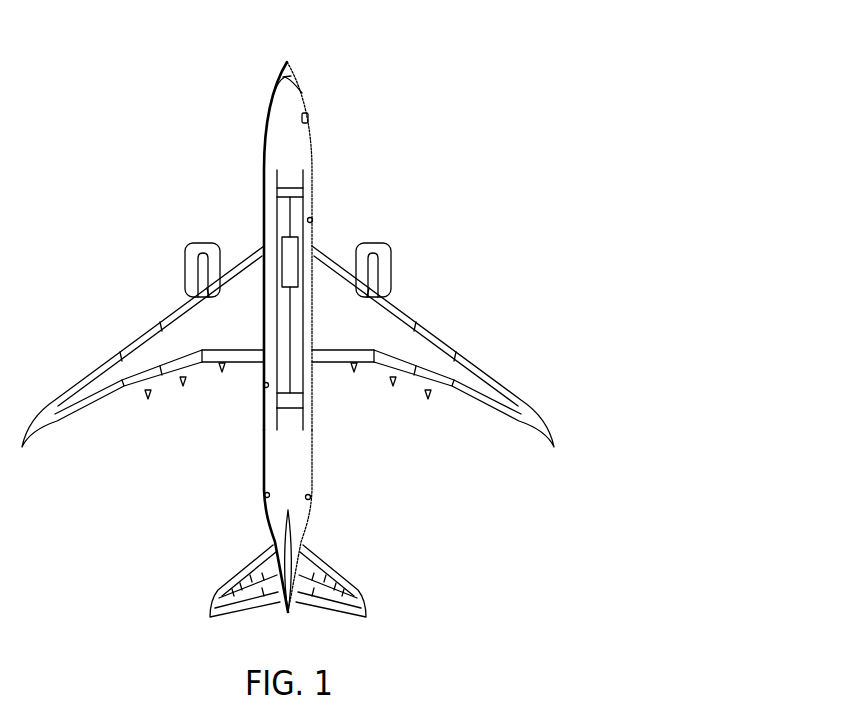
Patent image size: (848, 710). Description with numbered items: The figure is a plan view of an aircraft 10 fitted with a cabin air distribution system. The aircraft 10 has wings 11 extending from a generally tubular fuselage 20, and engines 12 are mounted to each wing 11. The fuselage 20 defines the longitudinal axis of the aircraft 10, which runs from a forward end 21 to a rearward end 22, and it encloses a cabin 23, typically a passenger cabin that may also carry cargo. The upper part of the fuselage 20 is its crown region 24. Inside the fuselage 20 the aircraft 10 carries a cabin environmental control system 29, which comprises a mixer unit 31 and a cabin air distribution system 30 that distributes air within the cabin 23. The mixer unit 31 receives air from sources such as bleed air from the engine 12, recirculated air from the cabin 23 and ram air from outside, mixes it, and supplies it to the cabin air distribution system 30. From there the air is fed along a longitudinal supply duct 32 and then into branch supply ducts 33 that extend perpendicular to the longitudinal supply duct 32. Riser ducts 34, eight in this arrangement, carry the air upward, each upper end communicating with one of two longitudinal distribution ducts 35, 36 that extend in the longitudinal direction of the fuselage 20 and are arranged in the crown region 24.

The aircraft 10 is at (477, 72).
The wings 11 is at (457, 373).
The engines 12 is at (382, 243).
The fuselage 20 is at (277, 157).
The forward end 21 is at (285, 95).
The rearward end 22 is at (297, 523).
The cabin 23 is at (290, 430).
The crown region 24 is at (295, 155).
The cabin environmental control system 29 is at (250, 190).
The cabin air distribution system 30 is at (355, 183).
The mixer unit 31 is at (288, 248).
The longitudinal supply duct 32 is at (292, 380).
The branch supply ducts 33 is at (280, 417).
The riser ducts 34 is at (308, 408).
The longitudinal distribution duct 35 is at (305, 305).
The longitudinal distribution duct 36 is at (278, 313).